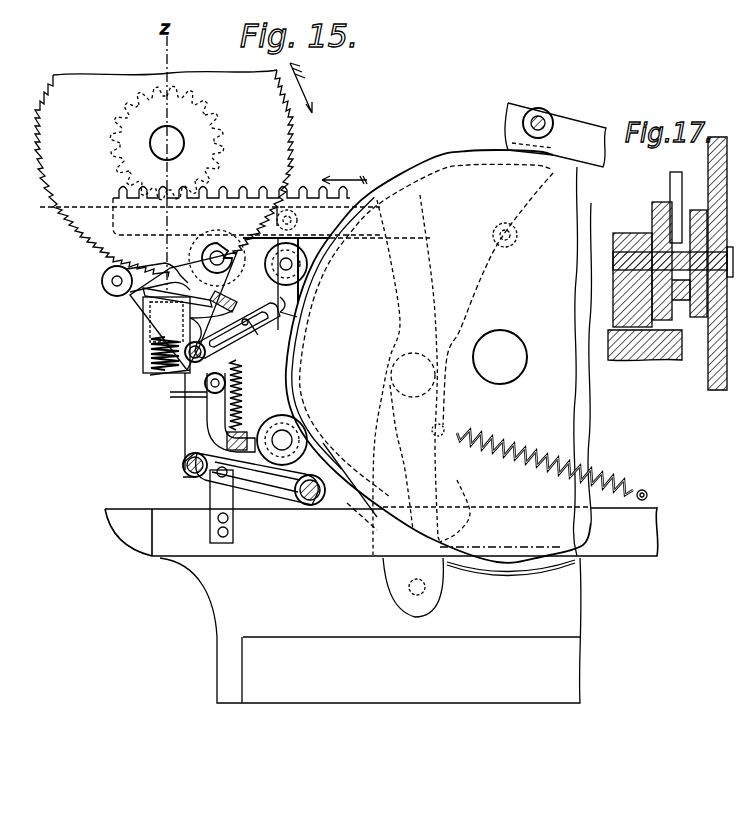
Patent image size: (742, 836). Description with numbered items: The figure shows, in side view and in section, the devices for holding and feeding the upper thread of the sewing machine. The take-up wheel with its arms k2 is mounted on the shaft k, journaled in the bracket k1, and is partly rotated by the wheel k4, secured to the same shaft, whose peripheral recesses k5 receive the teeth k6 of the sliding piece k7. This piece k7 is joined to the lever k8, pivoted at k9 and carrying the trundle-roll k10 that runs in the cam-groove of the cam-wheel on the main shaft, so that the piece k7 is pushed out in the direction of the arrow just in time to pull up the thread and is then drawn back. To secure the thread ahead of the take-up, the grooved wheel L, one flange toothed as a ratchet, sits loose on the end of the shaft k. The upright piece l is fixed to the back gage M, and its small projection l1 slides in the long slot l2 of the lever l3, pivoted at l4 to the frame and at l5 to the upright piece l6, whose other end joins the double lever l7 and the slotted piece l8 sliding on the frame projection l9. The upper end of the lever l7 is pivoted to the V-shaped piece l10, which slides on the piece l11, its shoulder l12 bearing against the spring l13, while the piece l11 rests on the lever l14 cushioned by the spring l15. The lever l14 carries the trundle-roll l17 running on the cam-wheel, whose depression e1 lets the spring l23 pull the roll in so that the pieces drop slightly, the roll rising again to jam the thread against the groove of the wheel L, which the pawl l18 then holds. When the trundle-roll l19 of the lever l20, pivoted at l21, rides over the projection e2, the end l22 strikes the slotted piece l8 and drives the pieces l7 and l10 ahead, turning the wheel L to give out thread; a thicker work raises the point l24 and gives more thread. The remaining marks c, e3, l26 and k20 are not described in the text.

In FIG. 15, the grooved wheel L is at (164, 173).
In FIG. 15, the teeth k6 is at (300, 198).
In FIG. 15, the cam lever k20 is at (395, 370).
In FIG. 15, the plate c is at (439, 356).
In FIG. 15, the trundle-roll k10 is at (555, 135).
In FIG. 15, the spring e3 is at (539, 462).
In FIG. 15, the lever k8 is at (393, 578).
In FIG. 15, the pivot k9 is at (426, 587).
In FIG. 15, the upright piece l is at (210, 497).
In FIG. 15, the pawl l18 is at (205, 252).
In FIG. 15, the trundle-roll l19 is at (305, 266).
In FIG. 15, the shoulder l12 is at (230, 300).
In FIG. 15, the spring l13 is at (223, 313).
In FIG. 15, the piece l10 is at (135, 290).
In FIG. 15, the double lever l7 is at (150, 310).
In FIG. 15, the piece l11 is at (150, 338).
In FIG. 15, the spring l15 is at (150, 355).
In FIG. 15, the point l24 is at (188, 372).
In FIG. 15, the slotted piece l8 is at (232, 319).
In FIG. 15, the projection l9 is at (257, 338).
In FIG. 15, the lever l14 is at (205, 405).
In FIG. 15, the upright piece l6 is at (195, 424).
In FIG. 15, the pivot l26 is at (230, 384).
In FIG. 15, the spring l23 is at (243, 420).
In FIG. 15, the trundle-roll l17 is at (300, 452).
In FIG. 15, the pivot l5 is at (183, 465).
In FIG. 15, the small projection l1 is at (200, 484).
In FIG. 15, the long slot l2 is at (268, 484).
In FIG. 15, the lever l3 is at (315, 502).
In FIG. 15, the pivot l4 is at (335, 484).
In FIG. 15, the back gage M is at (290, 525).
In FIG. 15, the depression e1 is at (362, 498).
In FIG. 15, the projection e2 is at (291, 360).
In FIG. 15, the lever l20 is at (298, 305).
In FIG. 15, the end of lever l22 is at (298, 320).
In FIG. 15, the pivot l21 is at (285, 218).
In FIG. 15, the piece k7 is at (315, 214).
In FIG. 17, the shaft k is at (613, 262).
In FIG. 17, the bracket k1 is at (613, 300).
In FIG. 17, the arms k2 is at (670, 183).
In FIG. 17, the recesses k5 is at (698, 210).
In FIG. 17, the wheel k4 is at (688, 298).